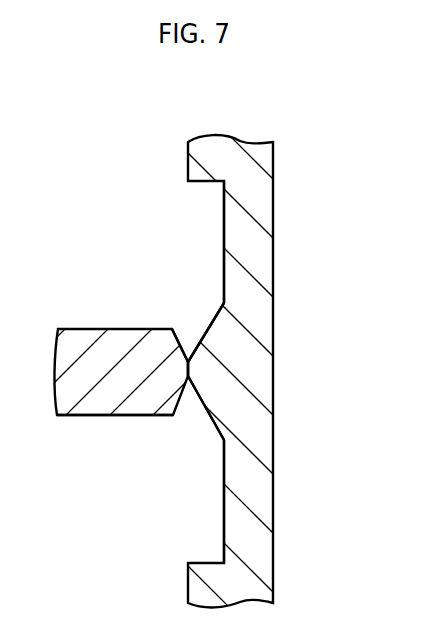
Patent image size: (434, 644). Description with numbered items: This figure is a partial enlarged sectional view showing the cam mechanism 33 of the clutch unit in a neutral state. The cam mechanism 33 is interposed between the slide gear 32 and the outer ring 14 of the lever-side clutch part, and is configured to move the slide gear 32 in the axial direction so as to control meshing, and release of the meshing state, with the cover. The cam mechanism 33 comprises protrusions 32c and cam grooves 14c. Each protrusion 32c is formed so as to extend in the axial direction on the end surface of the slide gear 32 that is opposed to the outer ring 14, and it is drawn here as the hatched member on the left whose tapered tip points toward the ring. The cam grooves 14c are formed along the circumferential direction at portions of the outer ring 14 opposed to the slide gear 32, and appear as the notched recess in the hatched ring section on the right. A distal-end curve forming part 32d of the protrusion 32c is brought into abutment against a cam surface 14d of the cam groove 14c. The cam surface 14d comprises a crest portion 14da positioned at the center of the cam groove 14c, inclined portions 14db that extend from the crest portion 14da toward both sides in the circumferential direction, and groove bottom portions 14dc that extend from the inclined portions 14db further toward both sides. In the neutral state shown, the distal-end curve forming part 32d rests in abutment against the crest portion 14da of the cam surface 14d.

The outer ring 14 is at (275, 250).
The cam groove 14c is at (206, 475).
The cam surface 14d is at (197, 411).
The crest portion 14da is at (190, 372).
The inclined portion 14db is at (205, 316).
The groove bottom portion 14dc is at (224, 218).
The slide gear 32 is at (92, 328).
The protrusion 32c is at (97, 400).
The distal-end curve forming part 32d is at (178, 352).
The cam mechanism 33 is at (138, 483).